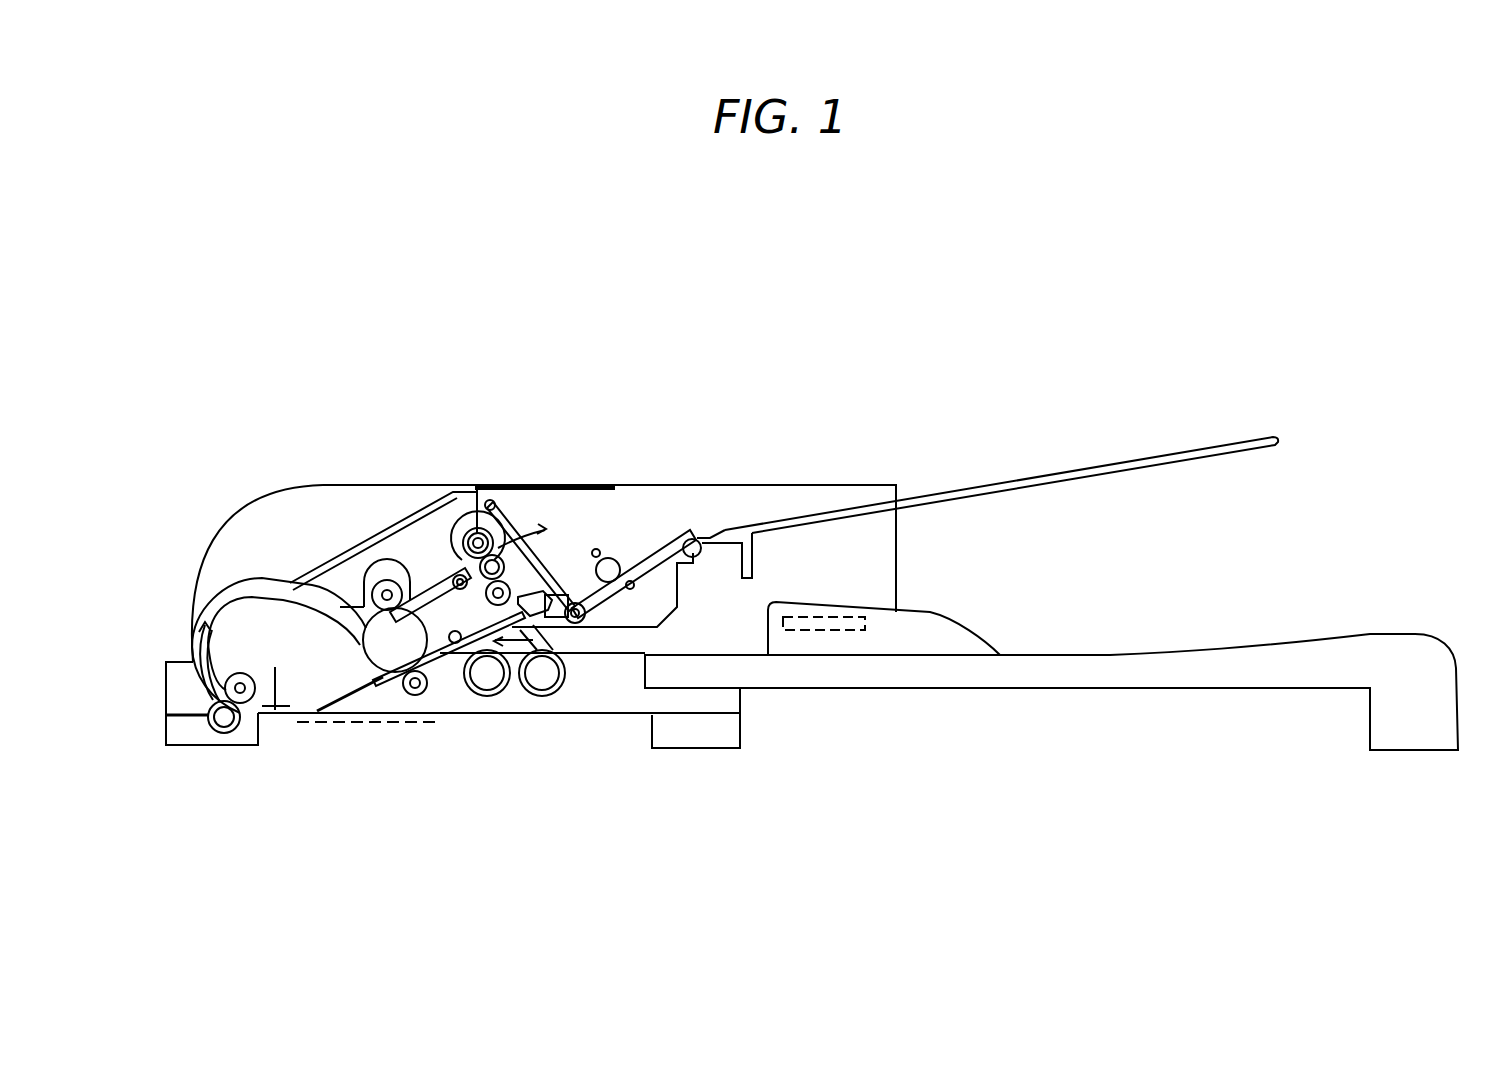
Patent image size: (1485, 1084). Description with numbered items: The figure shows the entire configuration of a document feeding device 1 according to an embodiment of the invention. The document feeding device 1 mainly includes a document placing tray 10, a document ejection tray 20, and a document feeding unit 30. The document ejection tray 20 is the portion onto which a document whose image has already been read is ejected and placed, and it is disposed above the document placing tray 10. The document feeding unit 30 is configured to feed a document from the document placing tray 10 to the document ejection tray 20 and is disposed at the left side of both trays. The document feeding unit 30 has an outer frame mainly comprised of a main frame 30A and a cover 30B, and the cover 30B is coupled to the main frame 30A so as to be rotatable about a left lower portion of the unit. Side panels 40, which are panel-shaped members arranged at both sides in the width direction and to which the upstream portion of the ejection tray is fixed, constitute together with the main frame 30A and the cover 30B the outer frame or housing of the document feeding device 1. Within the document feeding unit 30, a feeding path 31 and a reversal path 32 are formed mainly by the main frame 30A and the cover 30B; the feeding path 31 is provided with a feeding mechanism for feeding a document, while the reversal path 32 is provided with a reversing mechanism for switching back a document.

The document feeding device 1 is at (240, 358).
The document placing tray 10 is at (1090, 633).
The document ejection tray 20 is at (1042, 457).
The document feeding unit 30 is at (220, 527).
The main frame 30A is at (161, 657).
The cover 30B is at (366, 480).
The feeding path 31 is at (216, 590).
The reversal path 32 is at (482, 583).
The side panels 40 is at (750, 495).